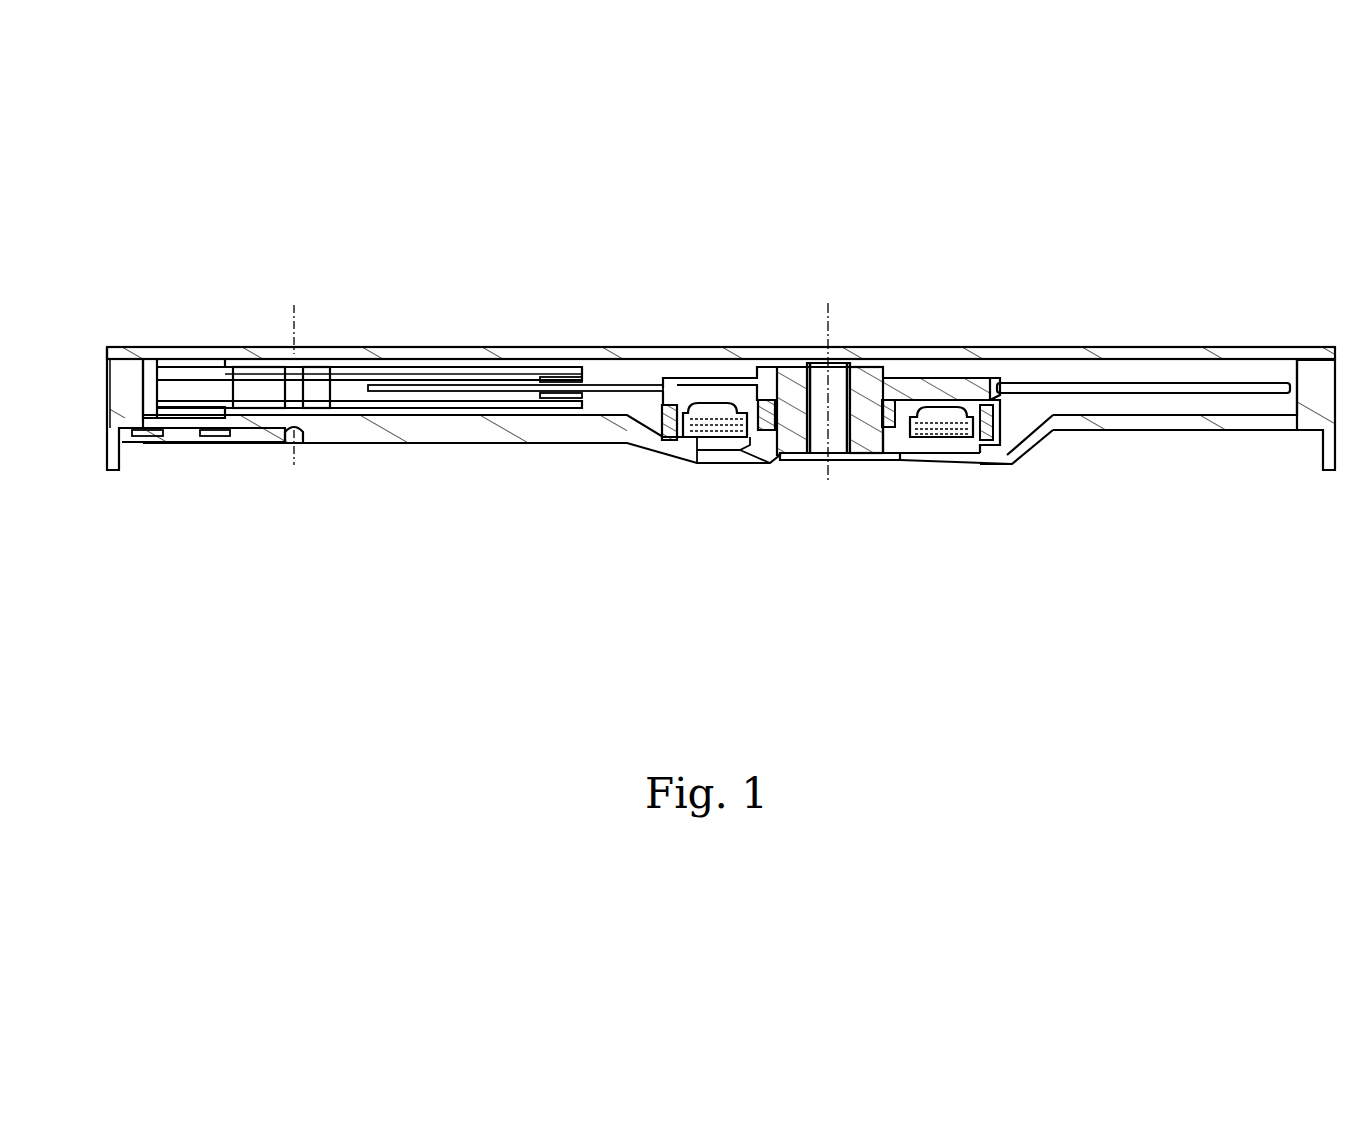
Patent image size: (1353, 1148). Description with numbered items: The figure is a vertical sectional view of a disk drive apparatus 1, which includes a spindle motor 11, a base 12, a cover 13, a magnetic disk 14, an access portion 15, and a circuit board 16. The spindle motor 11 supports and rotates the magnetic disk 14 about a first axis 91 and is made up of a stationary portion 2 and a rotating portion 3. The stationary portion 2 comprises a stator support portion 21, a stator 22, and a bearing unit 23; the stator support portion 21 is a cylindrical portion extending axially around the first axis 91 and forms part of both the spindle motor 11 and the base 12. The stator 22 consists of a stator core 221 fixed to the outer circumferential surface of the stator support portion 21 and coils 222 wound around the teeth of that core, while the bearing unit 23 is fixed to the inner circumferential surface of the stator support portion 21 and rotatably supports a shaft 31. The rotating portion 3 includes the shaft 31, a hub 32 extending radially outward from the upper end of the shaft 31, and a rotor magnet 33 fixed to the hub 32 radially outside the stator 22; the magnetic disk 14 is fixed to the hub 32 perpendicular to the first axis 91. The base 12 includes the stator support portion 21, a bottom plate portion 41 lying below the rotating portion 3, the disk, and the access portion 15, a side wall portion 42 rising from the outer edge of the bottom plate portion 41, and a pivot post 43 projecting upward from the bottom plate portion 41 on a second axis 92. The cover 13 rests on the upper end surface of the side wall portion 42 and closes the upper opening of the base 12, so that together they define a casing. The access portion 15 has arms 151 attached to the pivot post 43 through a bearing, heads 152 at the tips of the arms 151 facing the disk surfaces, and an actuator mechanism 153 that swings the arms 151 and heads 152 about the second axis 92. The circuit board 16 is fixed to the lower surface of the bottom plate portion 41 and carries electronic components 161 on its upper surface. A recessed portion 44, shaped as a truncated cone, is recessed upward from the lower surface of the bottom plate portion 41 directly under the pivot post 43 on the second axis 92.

The disk drive apparatus 1 is at (413, 292).
The stationary portion 2 is at (972, 578).
The rotating portion 3 is at (1005, 280).
The spindle motor 11 is at (700, 365).
The base 12 is at (1132, 442).
The cover 13 is at (1085, 352).
The magnetic disk 14 is at (1177, 382).
The access portion 15 is at (494, 358).
The circuit board 16 is at (233, 445).
The stator support portion 21 is at (897, 462).
The stator 22 is at (947, 487).
The bearing unit 23 is at (862, 462).
The shaft 31 is at (838, 383).
The hub 32 is at (920, 393).
The rotor magnet 33 is at (985, 378).
The bottom plate portion 41 is at (393, 435).
The side wall portion 42 is at (120, 386).
The pivot post 43 is at (302, 378).
The recessed portion 44 is at (300, 450).
The first axis 91 is at (826, 322).
The second axis 92 is at (292, 330).
The arm 151 is at (490, 395).
The head 152 is at (580, 402).
The actuator mechanism 153 is at (197, 365).
The electronic component 161 is at (212, 440).
The stator core 221 is at (937, 450).
The coil 222 is at (960, 450).